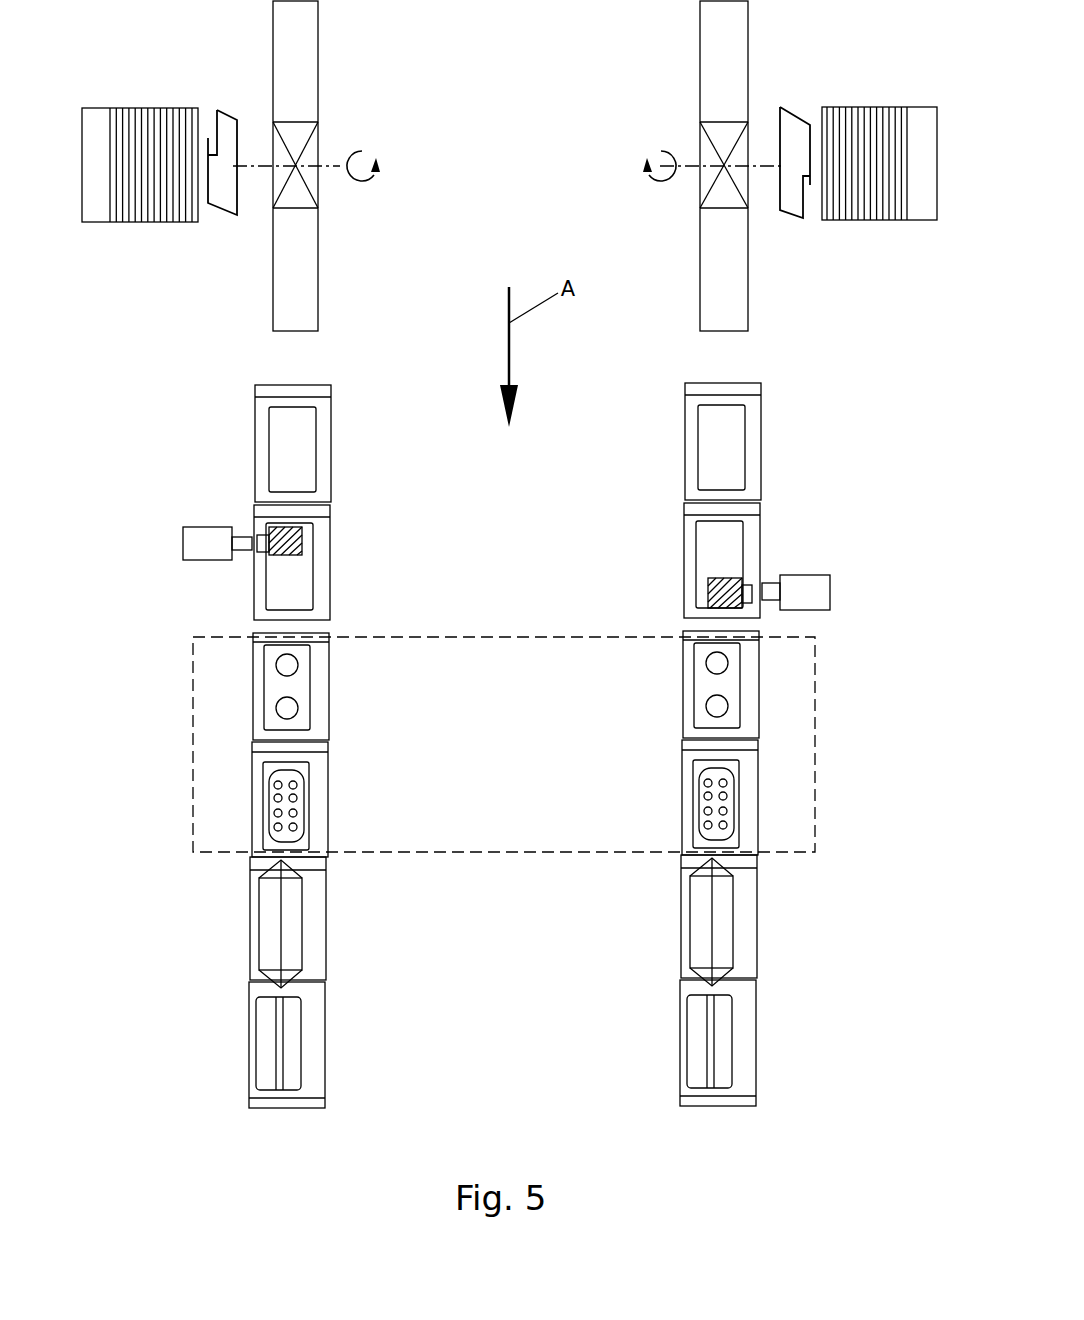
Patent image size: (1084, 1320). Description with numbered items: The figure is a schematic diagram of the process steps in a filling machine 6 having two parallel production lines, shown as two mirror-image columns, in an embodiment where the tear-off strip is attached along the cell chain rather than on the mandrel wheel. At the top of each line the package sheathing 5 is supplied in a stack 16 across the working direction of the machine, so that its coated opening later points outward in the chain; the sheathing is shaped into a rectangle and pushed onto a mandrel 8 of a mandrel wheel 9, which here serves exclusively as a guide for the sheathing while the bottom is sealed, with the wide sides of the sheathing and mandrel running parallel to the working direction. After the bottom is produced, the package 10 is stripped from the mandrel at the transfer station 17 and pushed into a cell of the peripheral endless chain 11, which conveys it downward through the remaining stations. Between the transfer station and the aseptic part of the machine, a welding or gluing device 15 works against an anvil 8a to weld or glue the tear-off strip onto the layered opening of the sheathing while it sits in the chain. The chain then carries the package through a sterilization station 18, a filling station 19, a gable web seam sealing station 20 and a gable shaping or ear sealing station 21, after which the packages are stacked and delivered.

The package sheathing 5 is at (226, 110).
The filling machine 6 is at (511, 80).
The mandrel 8 is at (315, 190).
The anvil 8a is at (300, 540).
The mandrel wheel 9 is at (307, 58).
The package 10 is at (268, 430).
The endless chain 11 is at (505, 737).
The welding or gluing device 15 is at (192, 553).
The stack 16 is at (162, 210).
The transfer station 17 is at (482, 441).
The sterilization station 18 is at (343, 688).
The filling station 19 is at (343, 795).
The gable web seam sealing station 20 is at (341, 919).
The gable shaping station 21 is at (341, 1039).